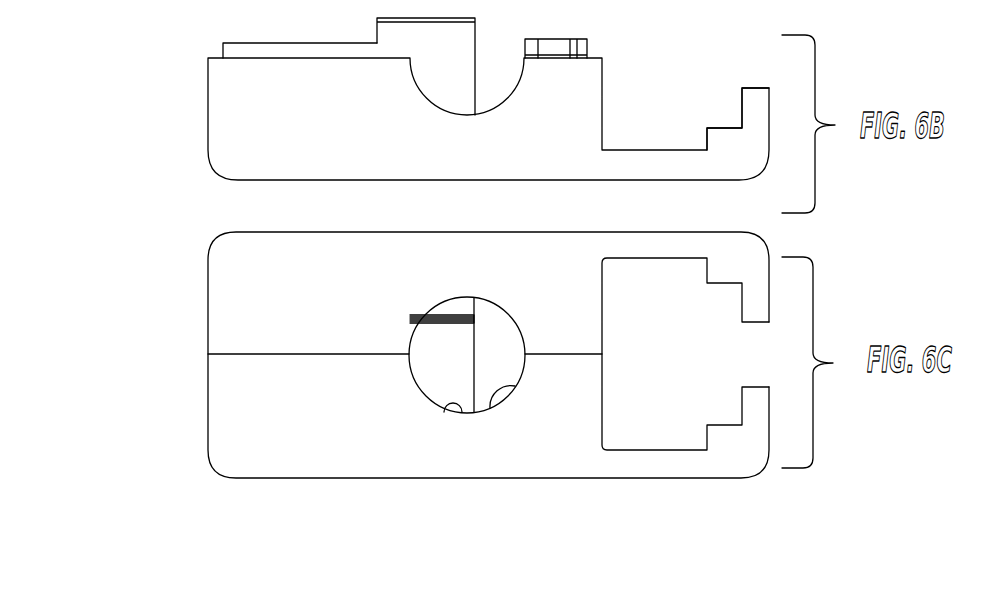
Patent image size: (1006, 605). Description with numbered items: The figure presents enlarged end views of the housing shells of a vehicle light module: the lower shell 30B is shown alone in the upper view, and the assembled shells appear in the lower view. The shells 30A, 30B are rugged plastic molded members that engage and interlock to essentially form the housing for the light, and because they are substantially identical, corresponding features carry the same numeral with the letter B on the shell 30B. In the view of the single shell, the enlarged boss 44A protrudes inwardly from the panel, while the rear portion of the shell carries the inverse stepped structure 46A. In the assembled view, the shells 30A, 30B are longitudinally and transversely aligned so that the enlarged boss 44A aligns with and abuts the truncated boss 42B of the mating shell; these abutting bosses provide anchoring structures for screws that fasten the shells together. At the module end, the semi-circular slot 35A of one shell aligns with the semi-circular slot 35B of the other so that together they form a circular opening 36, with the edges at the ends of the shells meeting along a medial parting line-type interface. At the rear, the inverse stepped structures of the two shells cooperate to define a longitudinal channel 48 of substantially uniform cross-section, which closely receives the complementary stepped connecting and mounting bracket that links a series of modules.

In FIG. 6B, the shell 30A is at (242, 180).
In FIG. 6C, the shell 30A is at (233, 448).
In FIG. 6C, the shell 30B is at (233, 337).
In FIG. 6B, the enlarged boss 44A is at (452, 42).
In FIG. 6C, the enlarged boss 44A is at (450, 388).
In FIG. 6B, the inverse stepped structure 46A is at (722, 128).
In FIG. 6C, the truncated boss 42B is at (460, 306).
In FIG. 6C, the semi-circular slot 35B is at (514, 338).
In FIG. 6C, the semi-circular slot 35A is at (443, 410).
In FIG. 6C, the circular opening 36 is at (490, 410).
In FIG. 6C, the longitudinal channel 48 is at (672, 453).